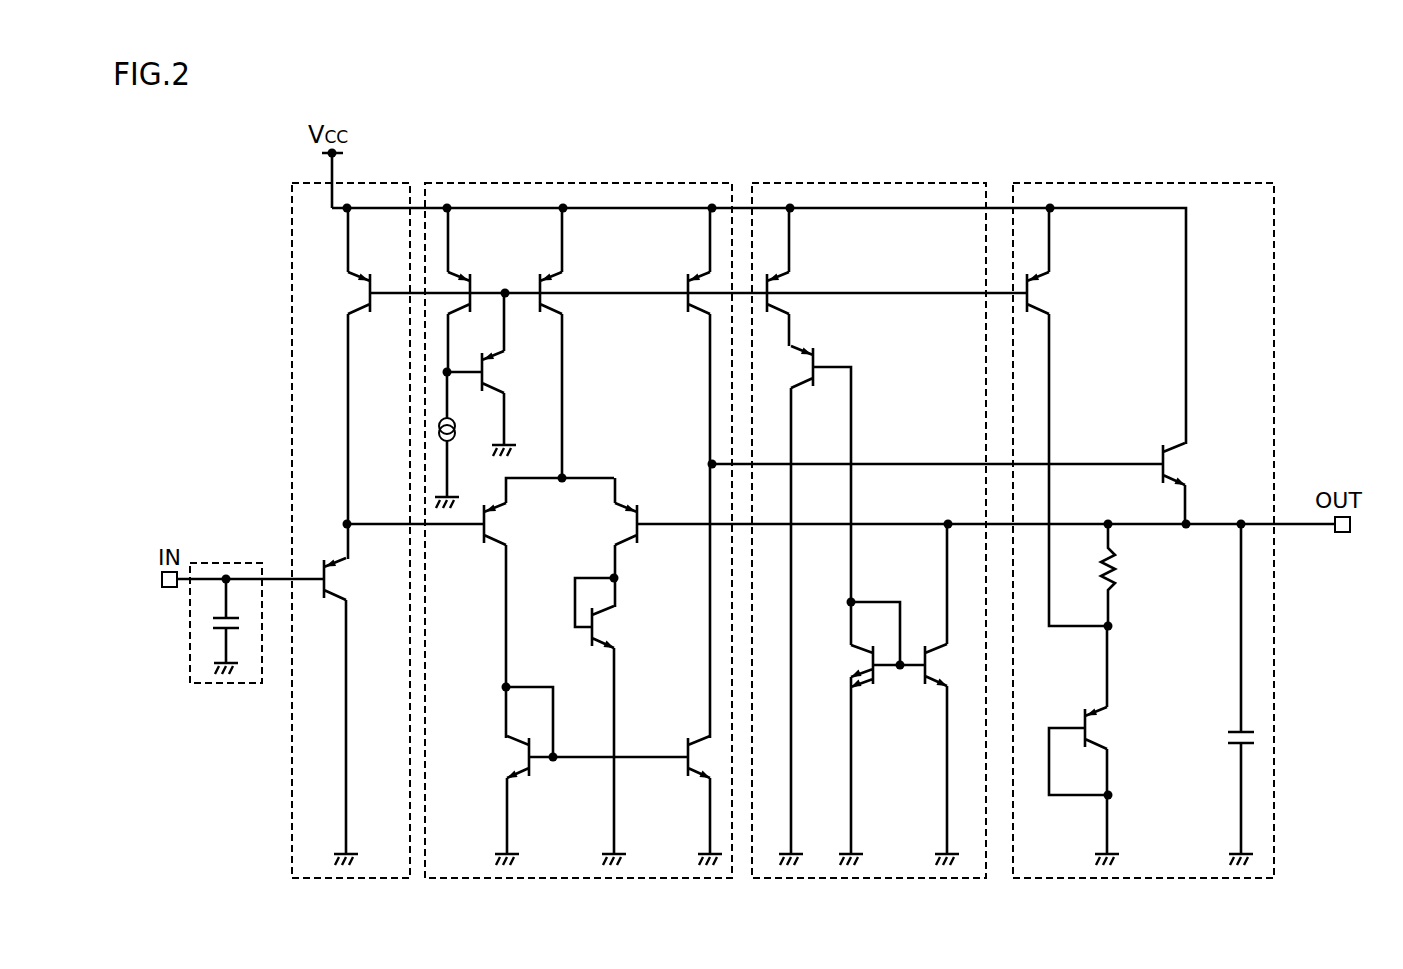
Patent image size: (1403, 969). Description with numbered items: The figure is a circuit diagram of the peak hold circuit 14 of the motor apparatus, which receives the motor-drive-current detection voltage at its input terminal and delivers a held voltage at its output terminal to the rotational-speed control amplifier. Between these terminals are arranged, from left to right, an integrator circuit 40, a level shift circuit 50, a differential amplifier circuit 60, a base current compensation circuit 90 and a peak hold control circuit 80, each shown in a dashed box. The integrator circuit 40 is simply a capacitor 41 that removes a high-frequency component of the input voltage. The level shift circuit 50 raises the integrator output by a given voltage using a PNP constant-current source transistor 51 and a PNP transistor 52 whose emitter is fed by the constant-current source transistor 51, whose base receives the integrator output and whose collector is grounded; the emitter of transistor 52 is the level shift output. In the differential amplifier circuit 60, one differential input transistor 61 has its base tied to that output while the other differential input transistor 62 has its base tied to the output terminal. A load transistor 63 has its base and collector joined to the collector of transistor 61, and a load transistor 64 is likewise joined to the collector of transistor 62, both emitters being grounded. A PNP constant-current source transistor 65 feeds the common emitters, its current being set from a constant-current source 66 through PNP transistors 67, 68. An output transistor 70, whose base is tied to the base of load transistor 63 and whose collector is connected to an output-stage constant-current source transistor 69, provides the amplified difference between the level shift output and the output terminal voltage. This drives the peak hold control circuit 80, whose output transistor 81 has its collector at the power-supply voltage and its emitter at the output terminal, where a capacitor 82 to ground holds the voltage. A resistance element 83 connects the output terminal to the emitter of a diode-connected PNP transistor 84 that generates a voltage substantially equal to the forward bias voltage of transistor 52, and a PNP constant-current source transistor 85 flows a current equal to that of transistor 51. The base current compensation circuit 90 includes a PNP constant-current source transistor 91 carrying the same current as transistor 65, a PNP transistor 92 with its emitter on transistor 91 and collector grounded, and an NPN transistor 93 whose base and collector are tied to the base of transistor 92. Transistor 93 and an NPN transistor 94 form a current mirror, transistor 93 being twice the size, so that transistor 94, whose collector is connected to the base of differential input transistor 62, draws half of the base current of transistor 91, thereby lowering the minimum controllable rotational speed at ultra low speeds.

The peak hold circuit 14 is at (785, 104).
The integrator circuit 40 is at (226, 651).
The capacitor 41 is at (237, 625).
The level shift circuit 50 is at (351, 509).
The constant-current source transistor 51 is at (336, 383).
The transistor 52 is at (354, 711).
The differential amplifier circuit 60 is at (578, 509).
The differential input transistor 61 is at (549, 606).
The differential input transistor 62 is at (604, 542).
The load transistor 63 is at (579, 774).
The load transistor 64 is at (600, 720).
The constant-current source transistor 65 is at (573, 343).
The constant-current source 66 is at (462, 440).
The transistor 67 is at (474, 290).
The transistor 68 is at (499, 374).
The constant-current source transistor 69 is at (700, 268).
The output transistor 70 is at (693, 723).
The peak hold control circuit 80 is at (1143, 509).
The output transistor 81 is at (1203, 483).
The capacitor 82 is at (1228, 694).
The resistance element 83 is at (1140, 577).
The transistor 84 is at (1104, 745).
The constant-current source transistor 85 is at (1067, 417).
The base current compensation circuit 90 is at (869, 509).
The constant-current source transistor 91 is at (803, 277).
The transistor 92 is at (804, 605).
The transistor 93 is at (869, 732).
The transistor 94 is at (955, 694).